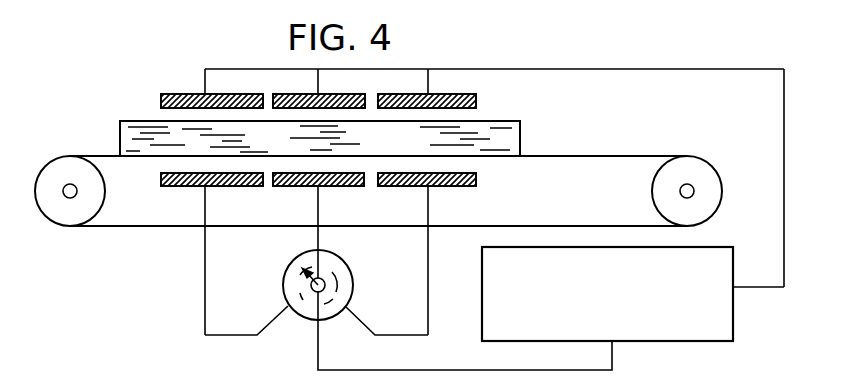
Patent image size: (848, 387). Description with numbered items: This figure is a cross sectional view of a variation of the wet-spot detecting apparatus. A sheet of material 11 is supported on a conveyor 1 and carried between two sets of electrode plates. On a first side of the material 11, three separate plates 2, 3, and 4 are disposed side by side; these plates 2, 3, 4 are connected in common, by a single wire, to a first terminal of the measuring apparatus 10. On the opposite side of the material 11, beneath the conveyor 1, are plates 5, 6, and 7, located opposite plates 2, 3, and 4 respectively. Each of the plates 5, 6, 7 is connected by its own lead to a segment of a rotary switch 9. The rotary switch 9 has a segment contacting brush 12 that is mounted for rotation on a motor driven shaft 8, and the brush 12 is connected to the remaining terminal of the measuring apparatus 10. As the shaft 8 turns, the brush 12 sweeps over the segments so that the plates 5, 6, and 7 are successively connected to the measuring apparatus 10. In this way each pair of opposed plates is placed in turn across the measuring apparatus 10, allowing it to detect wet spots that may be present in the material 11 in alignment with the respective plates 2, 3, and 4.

The conveyor 1 is at (656, 156).
The plate 2 is at (244, 92).
The plate 3 is at (355, 92).
The plate 4 is at (465, 92).
The plate 5 is at (246, 188).
The plate 6 is at (359, 188).
The plate 7 is at (470, 188).
The motor driven shaft 8 is at (306, 287).
The rotary switch 9 is at (367, 288).
The measuring apparatus 10 is at (520, 334).
The material 11 is at (320, 138).
The segment contacting brush 12 is at (302, 274).